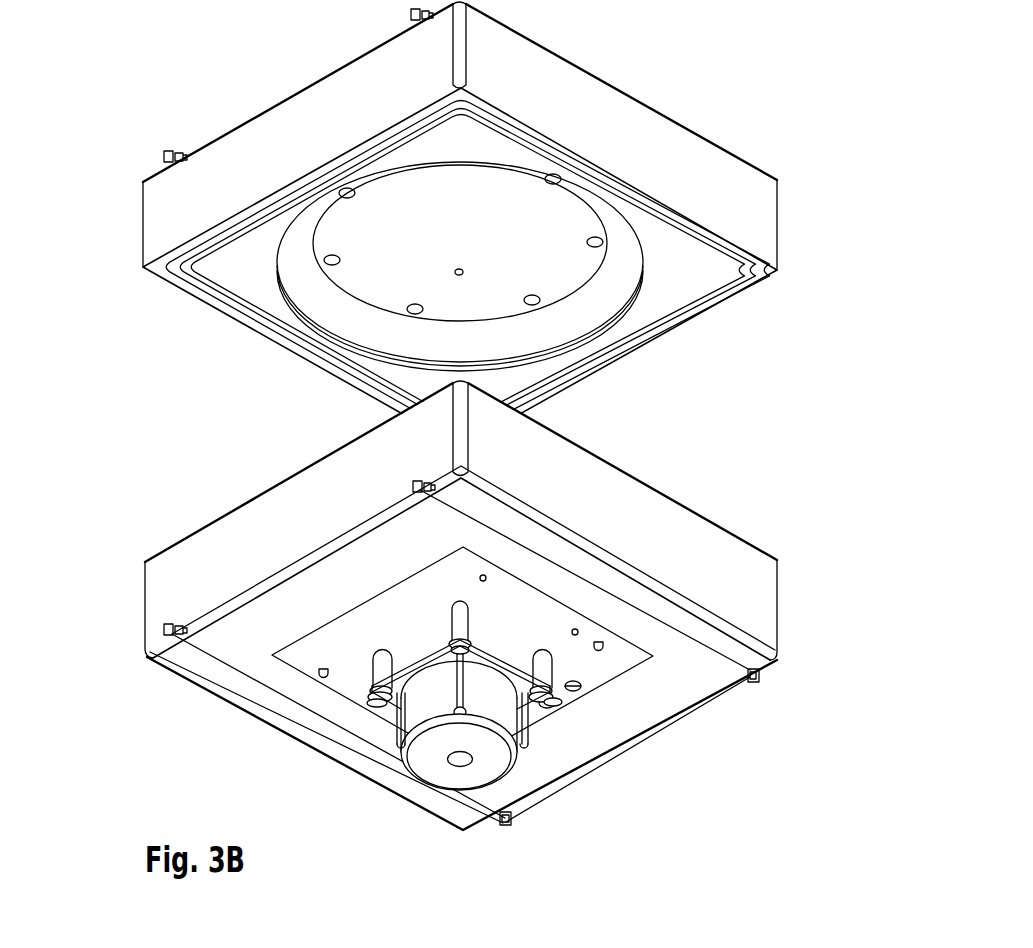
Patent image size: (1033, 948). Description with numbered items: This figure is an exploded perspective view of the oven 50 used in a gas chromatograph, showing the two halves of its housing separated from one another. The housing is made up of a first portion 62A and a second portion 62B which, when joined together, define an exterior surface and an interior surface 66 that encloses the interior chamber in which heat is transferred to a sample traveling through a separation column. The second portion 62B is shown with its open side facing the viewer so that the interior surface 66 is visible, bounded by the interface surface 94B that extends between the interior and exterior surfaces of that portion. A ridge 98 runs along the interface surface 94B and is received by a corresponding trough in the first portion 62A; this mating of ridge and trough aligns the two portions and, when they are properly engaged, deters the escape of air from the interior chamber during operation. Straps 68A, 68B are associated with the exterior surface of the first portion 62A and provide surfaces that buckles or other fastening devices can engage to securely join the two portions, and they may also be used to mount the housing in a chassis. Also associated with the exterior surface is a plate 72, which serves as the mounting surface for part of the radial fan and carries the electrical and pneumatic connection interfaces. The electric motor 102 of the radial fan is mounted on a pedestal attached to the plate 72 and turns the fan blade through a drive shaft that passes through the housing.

The oven 50 is at (648, 46).
The second portion 62B is at (174, 214).
The first portion 62A is at (176, 590).
The interior surface 66 is at (473, 221).
The interface surface 94B is at (323, 370).
The ridge 98 is at (618, 350).
The plate 72 is at (420, 634).
The strap 68A is at (505, 826).
The strap 68B is at (740, 672).
The electric motor 102 is at (487, 765).